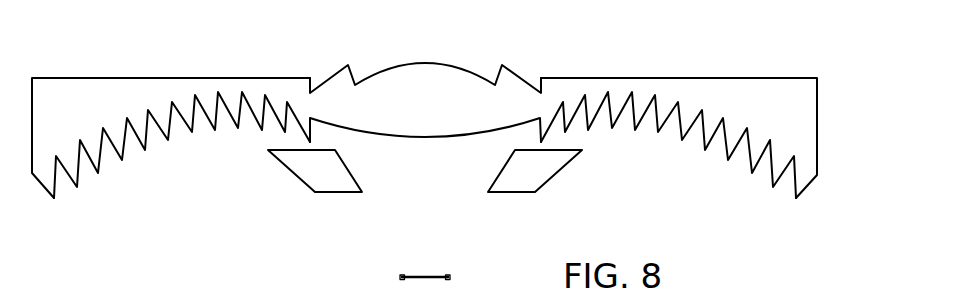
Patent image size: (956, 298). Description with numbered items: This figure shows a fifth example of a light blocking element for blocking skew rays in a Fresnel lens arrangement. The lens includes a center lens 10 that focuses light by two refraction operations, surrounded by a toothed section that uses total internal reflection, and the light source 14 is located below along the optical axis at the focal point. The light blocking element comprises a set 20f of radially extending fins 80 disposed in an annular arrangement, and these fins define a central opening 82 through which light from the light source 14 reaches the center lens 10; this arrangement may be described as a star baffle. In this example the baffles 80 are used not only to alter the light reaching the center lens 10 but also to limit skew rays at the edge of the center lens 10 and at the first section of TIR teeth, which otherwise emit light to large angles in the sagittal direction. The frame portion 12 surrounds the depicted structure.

The center lens 10 is at (378, 74).
The housing frame 12 is at (192, 75).
The light source 14 is at (418, 277).
The set of radially extending fins 20f is at (252, 158).
The fins 80 is at (306, 184).
The central opening 82 is at (432, 192).